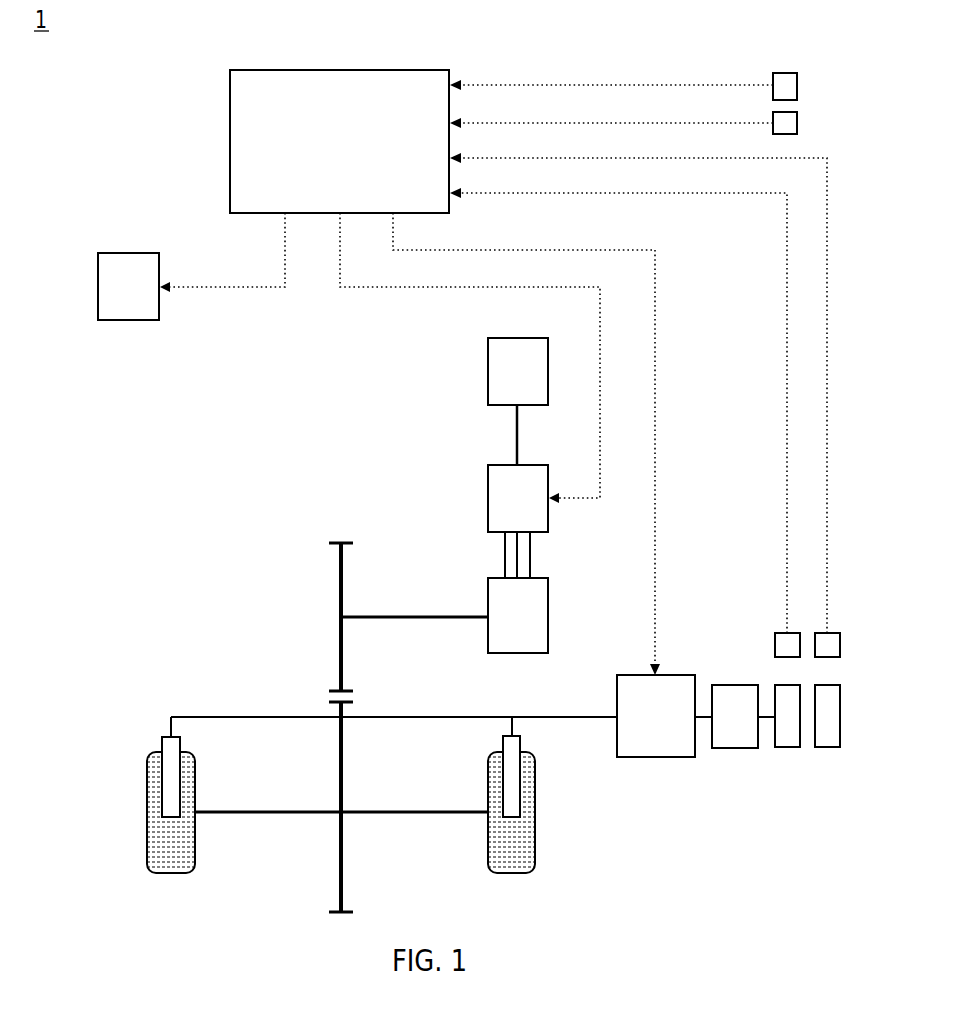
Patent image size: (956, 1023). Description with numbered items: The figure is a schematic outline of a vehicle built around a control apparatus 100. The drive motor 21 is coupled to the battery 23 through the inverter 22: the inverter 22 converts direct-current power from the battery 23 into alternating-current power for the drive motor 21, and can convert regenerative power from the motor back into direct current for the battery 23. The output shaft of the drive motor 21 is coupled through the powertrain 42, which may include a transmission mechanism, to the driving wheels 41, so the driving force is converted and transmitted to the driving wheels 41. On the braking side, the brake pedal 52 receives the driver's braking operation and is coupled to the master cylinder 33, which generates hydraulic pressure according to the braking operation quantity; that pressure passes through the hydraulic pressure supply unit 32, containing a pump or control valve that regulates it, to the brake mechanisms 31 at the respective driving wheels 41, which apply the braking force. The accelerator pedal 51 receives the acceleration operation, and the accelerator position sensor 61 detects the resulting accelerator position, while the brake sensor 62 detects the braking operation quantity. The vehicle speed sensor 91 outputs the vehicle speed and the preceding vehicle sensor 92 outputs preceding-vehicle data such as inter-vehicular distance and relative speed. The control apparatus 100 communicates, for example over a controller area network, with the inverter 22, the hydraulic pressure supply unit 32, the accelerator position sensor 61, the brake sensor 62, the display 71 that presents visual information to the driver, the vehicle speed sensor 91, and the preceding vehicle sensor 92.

The control apparatus 100 is at (230, 104).
The display 71 is at (135, 253).
The vehicle speed sensor 91 is at (797, 86).
The preceding vehicle sensor 92 is at (797, 122).
The accelerator position sensor 61 is at (830, 633).
The brake sensor 62 is at (791, 633).
The battery 23 is at (488, 374).
The inverter 22 is at (488, 498).
The drive motor 21 is at (488, 598).
The powertrain 42 is at (344, 530).
The driving wheels 41 is at (147, 785).
The brake mechanisms 31 is at (160, 740).
The hydraulic pressure supply unit 32 is at (658, 758).
The master cylinder 33 is at (736, 748).
The brake pedal 52 is at (788, 748).
The accelerator pedal 51 is at (828, 748).